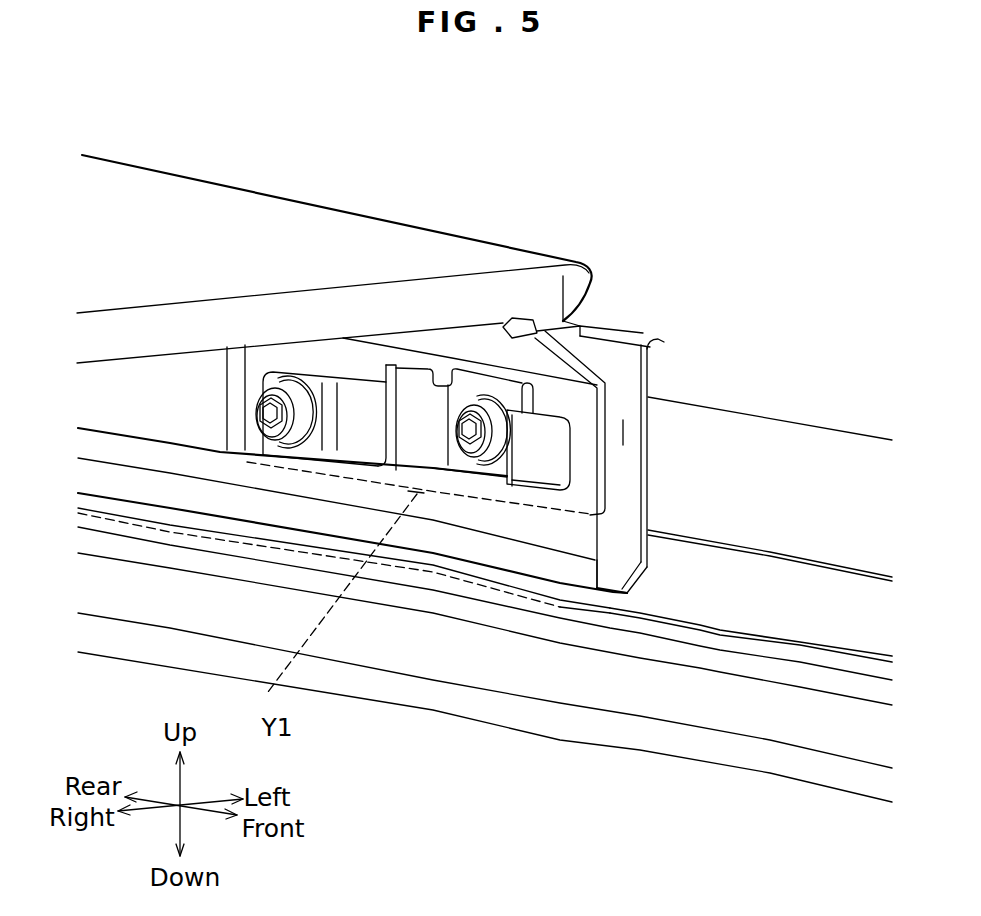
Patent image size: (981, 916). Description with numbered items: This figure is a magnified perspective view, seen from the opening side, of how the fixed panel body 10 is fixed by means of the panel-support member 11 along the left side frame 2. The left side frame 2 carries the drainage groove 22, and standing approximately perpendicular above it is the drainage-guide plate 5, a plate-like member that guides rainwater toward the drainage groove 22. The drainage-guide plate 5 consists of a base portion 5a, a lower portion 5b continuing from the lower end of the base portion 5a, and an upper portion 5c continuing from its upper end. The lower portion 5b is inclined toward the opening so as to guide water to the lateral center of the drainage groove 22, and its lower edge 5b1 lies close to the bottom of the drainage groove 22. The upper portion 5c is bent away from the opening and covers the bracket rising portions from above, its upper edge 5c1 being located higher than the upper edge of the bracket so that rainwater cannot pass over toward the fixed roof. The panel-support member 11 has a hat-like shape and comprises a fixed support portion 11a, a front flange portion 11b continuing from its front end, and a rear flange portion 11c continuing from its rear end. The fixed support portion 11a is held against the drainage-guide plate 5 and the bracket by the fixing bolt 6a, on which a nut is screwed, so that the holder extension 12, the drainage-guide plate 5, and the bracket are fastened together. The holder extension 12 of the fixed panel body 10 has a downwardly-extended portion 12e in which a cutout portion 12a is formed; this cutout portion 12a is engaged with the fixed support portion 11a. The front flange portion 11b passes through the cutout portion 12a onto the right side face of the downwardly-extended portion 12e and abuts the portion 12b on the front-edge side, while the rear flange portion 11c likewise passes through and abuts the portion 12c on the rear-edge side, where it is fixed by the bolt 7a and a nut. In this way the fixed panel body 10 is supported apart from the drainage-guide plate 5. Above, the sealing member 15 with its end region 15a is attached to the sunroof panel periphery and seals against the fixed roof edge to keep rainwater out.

The left side frame 2 is at (797, 420).
The drainage-guide plate 5 is at (637, 336).
The base portion 5a is at (626, 440).
The lower portion 5b is at (592, 562).
The lower edge 5b1 is at (603, 579).
The upper portion 5c is at (605, 328).
The upper edge 5c1 is at (662, 344).
The fixing bolt 6a is at (470, 526).
The bolt 7a is at (266, 434).
The fixed panel body 10 is at (268, 193).
The panel-support member 11 is at (357, 372).
The fixed support portion 11a is at (467, 463).
The front flange portion 11b is at (528, 486).
The rear flange portion 11c is at (367, 427).
The holder extension 12 is at (596, 371).
The cutout portion 12a is at (450, 377).
The portion on the front-edge side of the cutout portion 12b is at (582, 500).
The portion on the rear-edge side of the cutout portion 12c is at (368, 463).
The downwardly-extended portion 12e is at (197, 393).
The sealing member 15 is at (527, 233).
The lip end portion 15a is at (582, 332).
The drainage groove 22 is at (733, 663).